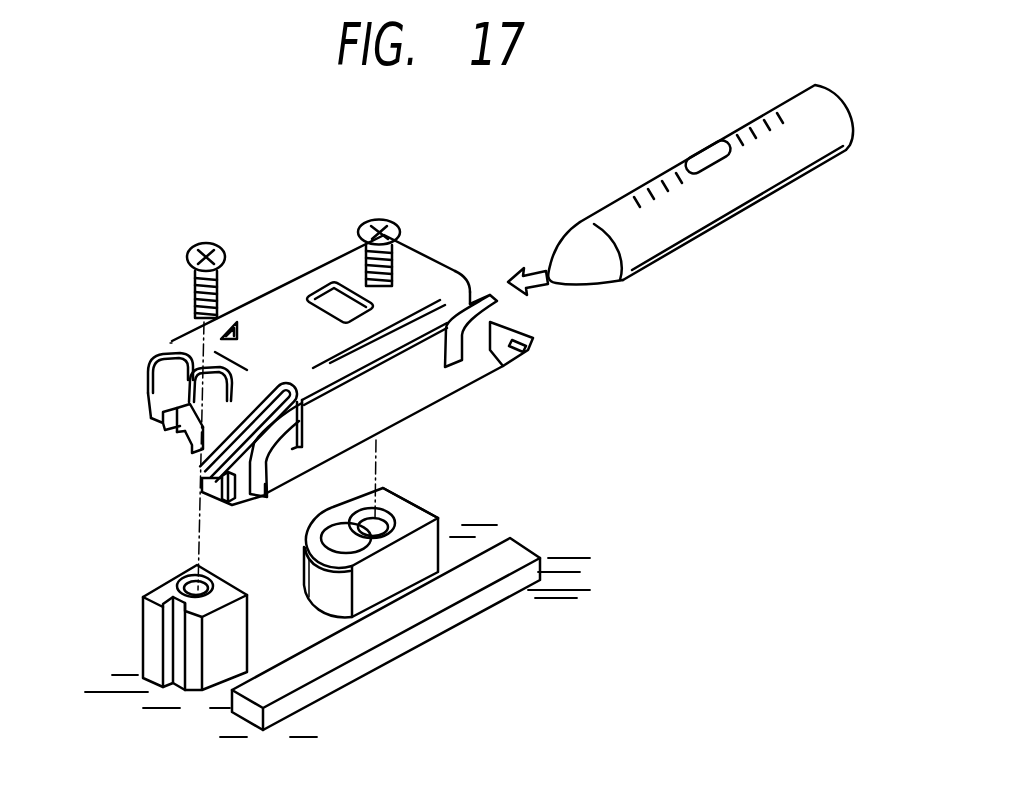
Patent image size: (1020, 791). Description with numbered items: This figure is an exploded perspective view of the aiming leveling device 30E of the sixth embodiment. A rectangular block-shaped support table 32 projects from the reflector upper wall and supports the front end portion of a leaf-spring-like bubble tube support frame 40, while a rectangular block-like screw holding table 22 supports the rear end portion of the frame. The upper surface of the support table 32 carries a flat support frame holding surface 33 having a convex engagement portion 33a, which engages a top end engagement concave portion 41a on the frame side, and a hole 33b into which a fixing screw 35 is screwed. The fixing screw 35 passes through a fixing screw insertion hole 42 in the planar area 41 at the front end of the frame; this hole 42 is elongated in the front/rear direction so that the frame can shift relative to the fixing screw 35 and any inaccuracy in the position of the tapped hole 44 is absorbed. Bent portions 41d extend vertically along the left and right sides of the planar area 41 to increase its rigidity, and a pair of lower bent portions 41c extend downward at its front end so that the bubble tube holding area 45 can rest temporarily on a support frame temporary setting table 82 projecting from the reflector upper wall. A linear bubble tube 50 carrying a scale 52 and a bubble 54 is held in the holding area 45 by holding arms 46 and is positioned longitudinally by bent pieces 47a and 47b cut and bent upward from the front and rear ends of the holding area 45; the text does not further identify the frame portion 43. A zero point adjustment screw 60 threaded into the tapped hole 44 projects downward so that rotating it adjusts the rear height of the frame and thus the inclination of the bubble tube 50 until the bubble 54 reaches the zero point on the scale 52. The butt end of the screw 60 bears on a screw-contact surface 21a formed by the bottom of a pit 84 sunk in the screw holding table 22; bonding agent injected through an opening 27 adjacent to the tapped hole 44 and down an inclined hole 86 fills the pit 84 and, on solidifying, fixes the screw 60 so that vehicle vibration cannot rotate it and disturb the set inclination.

The aiming leveling device 30E is at (196, 214).
The fixing screw 35 is at (189, 250).
The planar area 41 is at (170, 376).
The top end engagement concave portion 41a is at (174, 440).
The lower bent portions 41c is at (158, 428).
The bent portions 41d is at (168, 368).
The fixing screw insertion hole 42 is at (162, 395).
The opening 27 is at (331, 284).
The zero point adjustment screw 60 is at (381, 219).
The tapped hole 44 is at (408, 245).
The bubble tube support frame 40 is at (456, 228).
The bracket corner 43 is at (440, 267).
The bubble tube holding area 45 is at (481, 388).
The holding arms 46 is at (258, 447).
The front-end-side bent piece 47a is at (228, 498).
The rear-end-side bent piece 47b is at (533, 339).
The bubble tube 50 is at (695, 136).
The scale 52 is at (651, 188).
The bubble 54 is at (713, 143).
The pit 84 is at (380, 518).
The screw-contact surface 21a is at (398, 518).
The support frame temporary setting table 82 is at (494, 594).
The screw holding table 22 is at (395, 582).
The inclined hole 86 is at (343, 546).
The support table 32 is at (213, 657).
The support frame holding surface 33 is at (162, 585).
The convex engagement portion 33a is at (153, 628).
The hole 33b is at (178, 577).